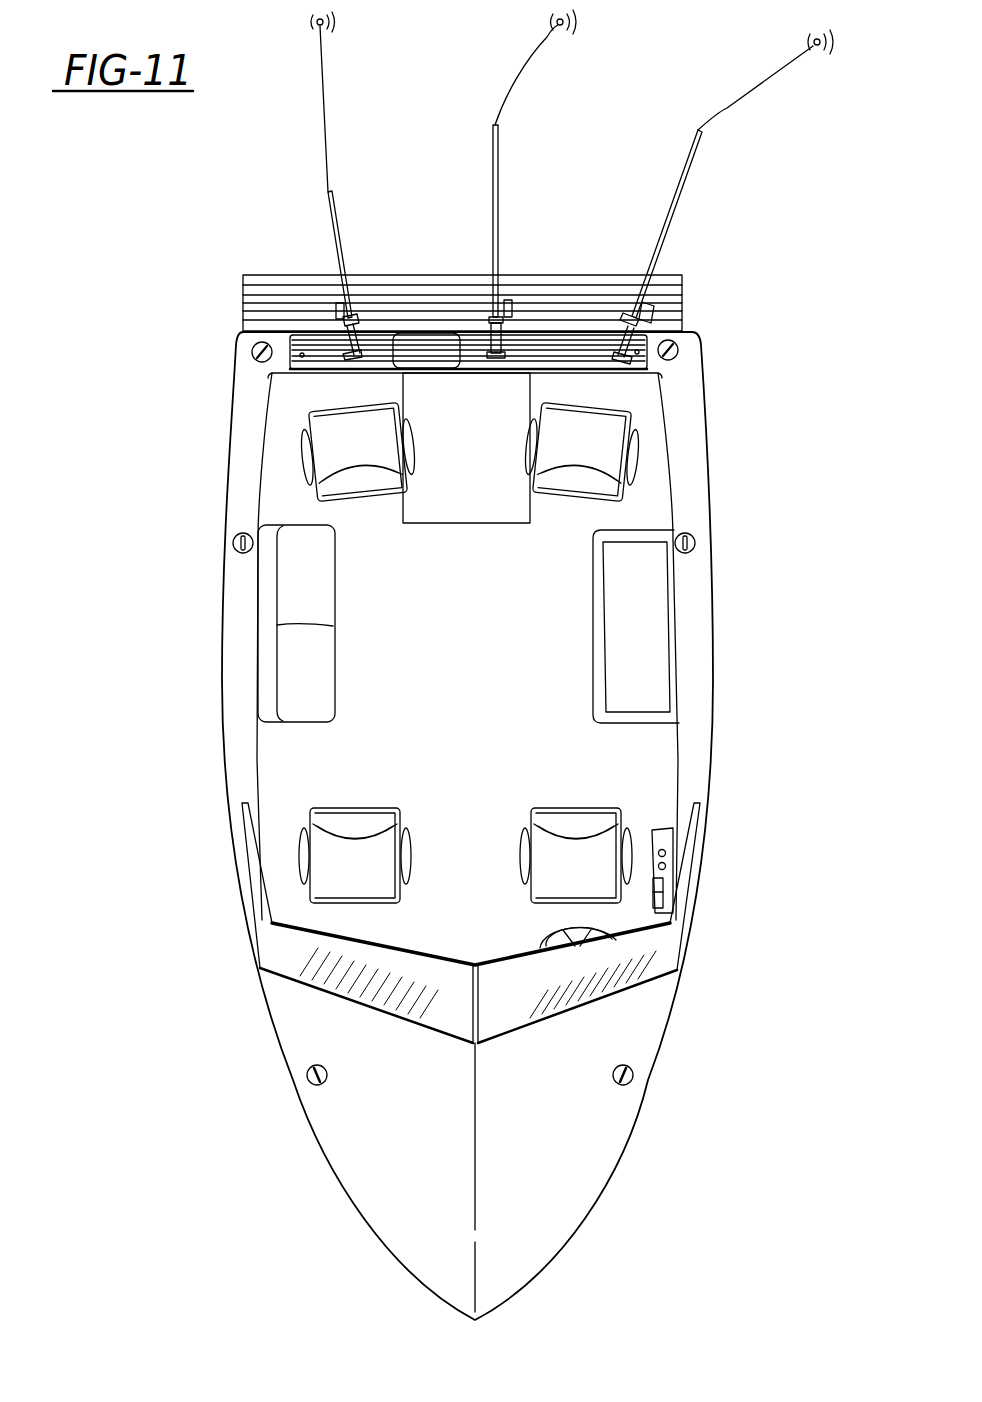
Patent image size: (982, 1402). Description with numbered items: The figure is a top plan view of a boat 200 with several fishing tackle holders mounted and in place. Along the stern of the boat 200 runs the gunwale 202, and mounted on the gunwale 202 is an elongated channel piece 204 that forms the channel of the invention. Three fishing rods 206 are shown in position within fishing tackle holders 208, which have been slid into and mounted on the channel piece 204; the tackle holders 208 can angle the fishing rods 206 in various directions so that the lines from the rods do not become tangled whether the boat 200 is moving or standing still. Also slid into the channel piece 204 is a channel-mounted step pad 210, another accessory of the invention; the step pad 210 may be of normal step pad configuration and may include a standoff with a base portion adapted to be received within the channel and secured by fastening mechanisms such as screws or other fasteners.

The boat 200 is at (212, 560).
The gunwale 202 is at (245, 428).
The elongated channel piece 204 is at (648, 363).
The fishing rods 206 is at (673, 185).
The fishing tackle holders 208 is at (612, 303).
The channel-mounted step pad 210 is at (427, 333).